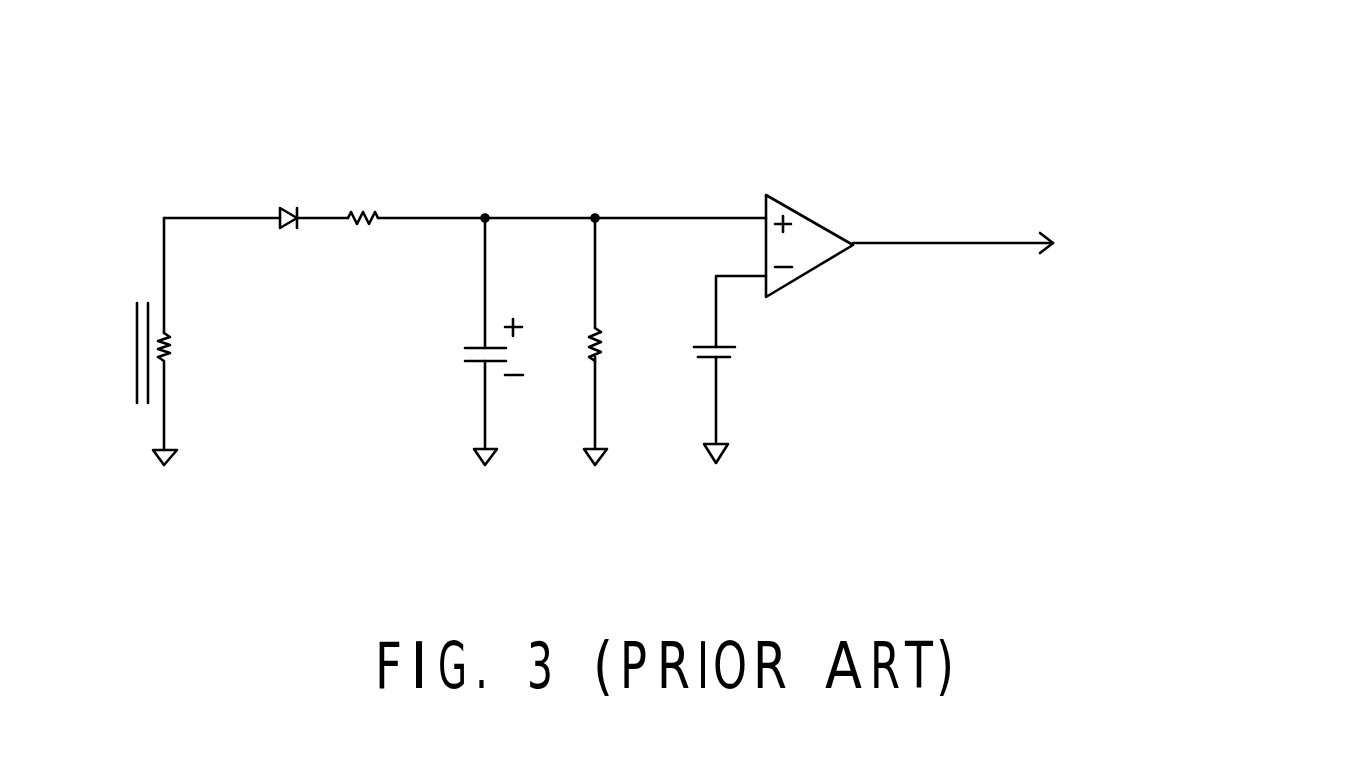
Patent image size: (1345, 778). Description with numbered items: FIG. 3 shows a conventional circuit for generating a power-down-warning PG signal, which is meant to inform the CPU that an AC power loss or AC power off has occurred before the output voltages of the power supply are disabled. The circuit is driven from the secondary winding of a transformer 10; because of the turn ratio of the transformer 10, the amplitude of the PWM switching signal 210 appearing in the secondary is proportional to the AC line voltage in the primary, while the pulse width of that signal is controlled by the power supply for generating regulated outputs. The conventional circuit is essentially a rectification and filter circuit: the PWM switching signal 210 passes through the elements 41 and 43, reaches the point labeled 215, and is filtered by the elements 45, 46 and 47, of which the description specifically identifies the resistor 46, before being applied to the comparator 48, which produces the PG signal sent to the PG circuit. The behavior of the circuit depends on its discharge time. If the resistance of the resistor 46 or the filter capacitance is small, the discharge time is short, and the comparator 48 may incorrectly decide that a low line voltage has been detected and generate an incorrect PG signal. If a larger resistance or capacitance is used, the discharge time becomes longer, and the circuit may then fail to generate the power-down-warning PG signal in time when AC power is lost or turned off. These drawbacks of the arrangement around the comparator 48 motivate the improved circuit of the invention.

The transformer 10 is at (131, 220).
The PWM switching signal 210 is at (200, 207).
The diode 41 is at (283, 207).
The resistor 43 is at (357, 207).
The node 215 is at (483, 205).
The capacitor 45 is at (470, 363).
The resistor 46 is at (607, 340).
The capacitor 47 is at (738, 352).
The comparator 48 is at (818, 213).